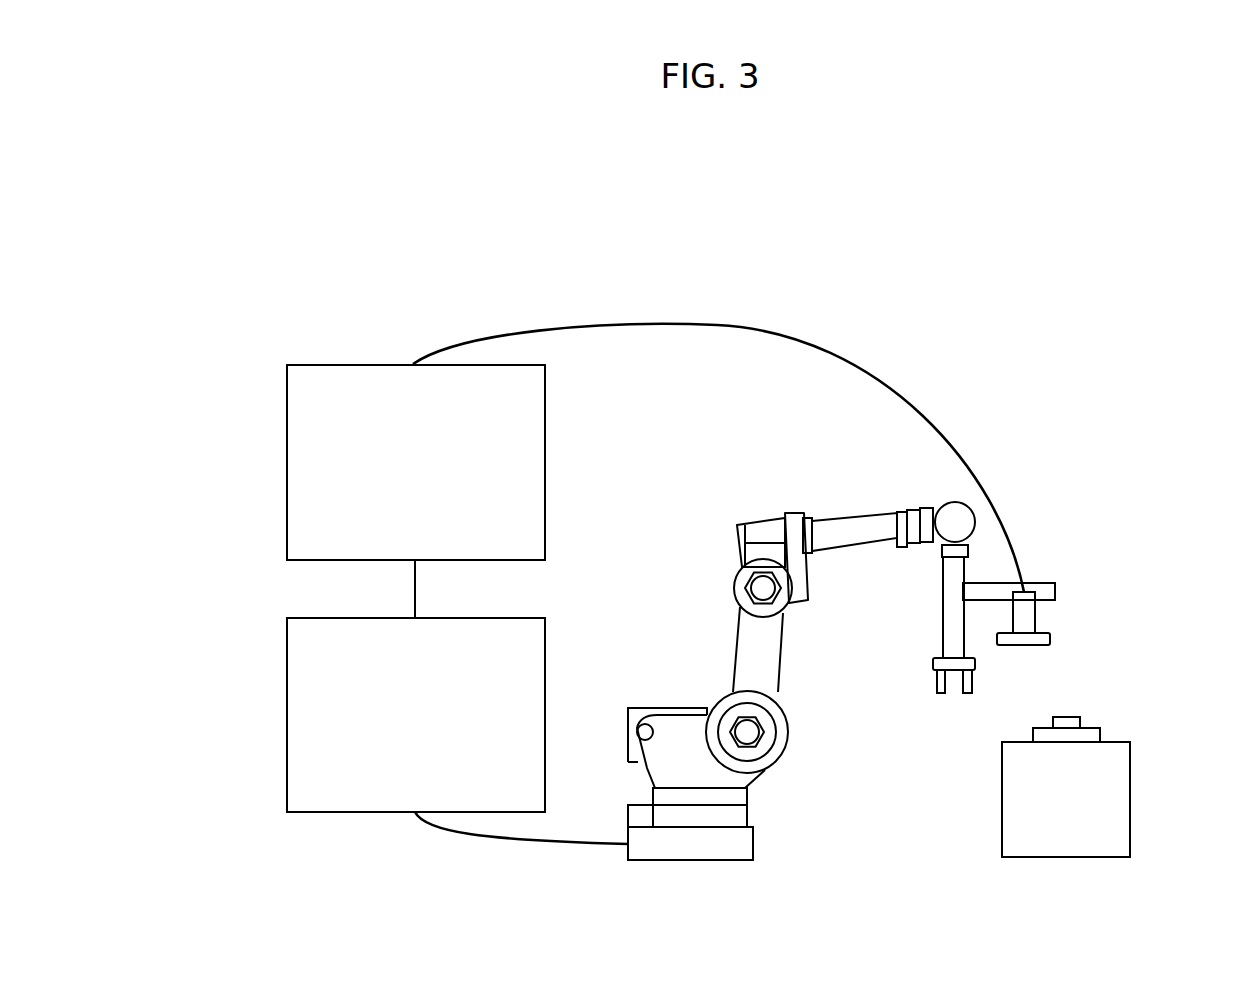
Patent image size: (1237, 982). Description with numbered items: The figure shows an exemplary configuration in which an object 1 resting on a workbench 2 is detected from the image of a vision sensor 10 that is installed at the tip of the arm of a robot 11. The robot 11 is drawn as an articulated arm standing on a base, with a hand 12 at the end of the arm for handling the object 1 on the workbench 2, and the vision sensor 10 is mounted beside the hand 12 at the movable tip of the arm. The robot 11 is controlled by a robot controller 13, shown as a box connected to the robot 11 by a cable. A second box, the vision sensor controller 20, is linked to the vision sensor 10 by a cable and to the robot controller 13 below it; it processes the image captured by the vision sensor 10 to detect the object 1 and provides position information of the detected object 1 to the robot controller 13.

The object 1 is at (1090, 727).
The workbench 2 is at (1130, 790).
The vision sensor 10 is at (1035, 620).
The robot 11 is at (675, 705).
The hand 12 is at (940, 695).
The robot controller 13 is at (287, 670).
The vision sensor controller 20 is at (287, 432).